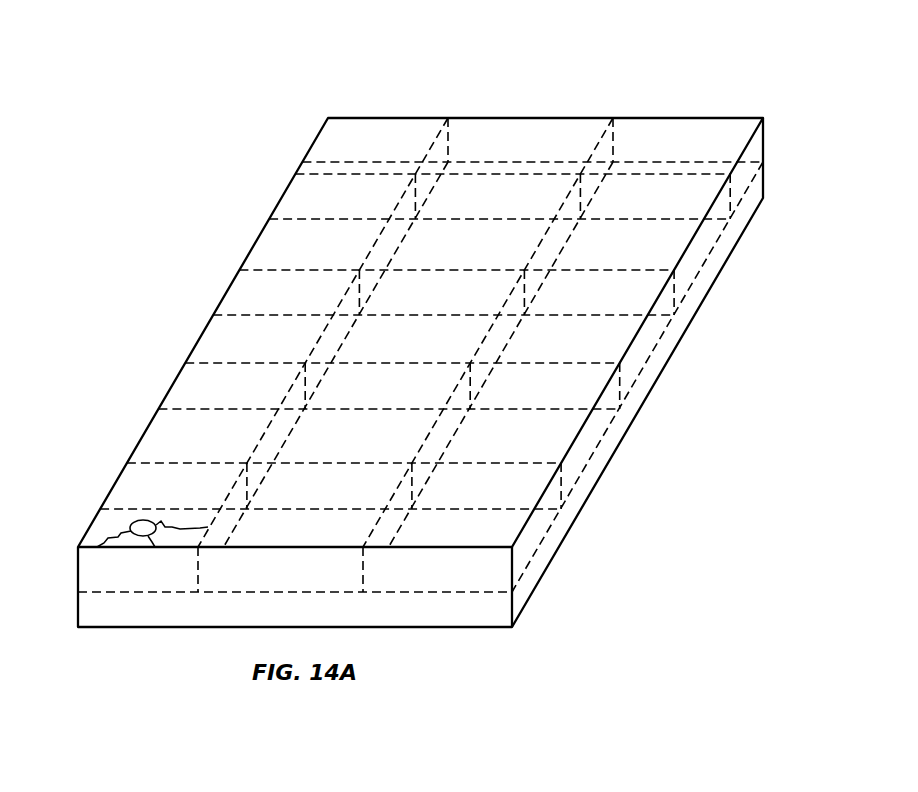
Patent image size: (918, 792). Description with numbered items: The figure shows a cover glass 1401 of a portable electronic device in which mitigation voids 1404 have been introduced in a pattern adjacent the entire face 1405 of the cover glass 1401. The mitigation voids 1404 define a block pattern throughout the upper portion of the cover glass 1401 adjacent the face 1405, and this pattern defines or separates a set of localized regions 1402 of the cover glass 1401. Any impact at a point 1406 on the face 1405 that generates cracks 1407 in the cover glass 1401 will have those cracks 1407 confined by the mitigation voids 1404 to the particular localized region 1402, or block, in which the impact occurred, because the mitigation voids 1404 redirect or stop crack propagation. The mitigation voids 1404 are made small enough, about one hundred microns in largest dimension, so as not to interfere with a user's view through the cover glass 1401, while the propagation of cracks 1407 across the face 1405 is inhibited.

The cover glass 1401 is at (705, 99).
The localized regions 1402 is at (212, 350).
The mitigation voids 1404 is at (245, 315).
The face 1405 is at (391, 142).
The point 1406 is at (141, 521).
The cracks 1407 is at (108, 543).